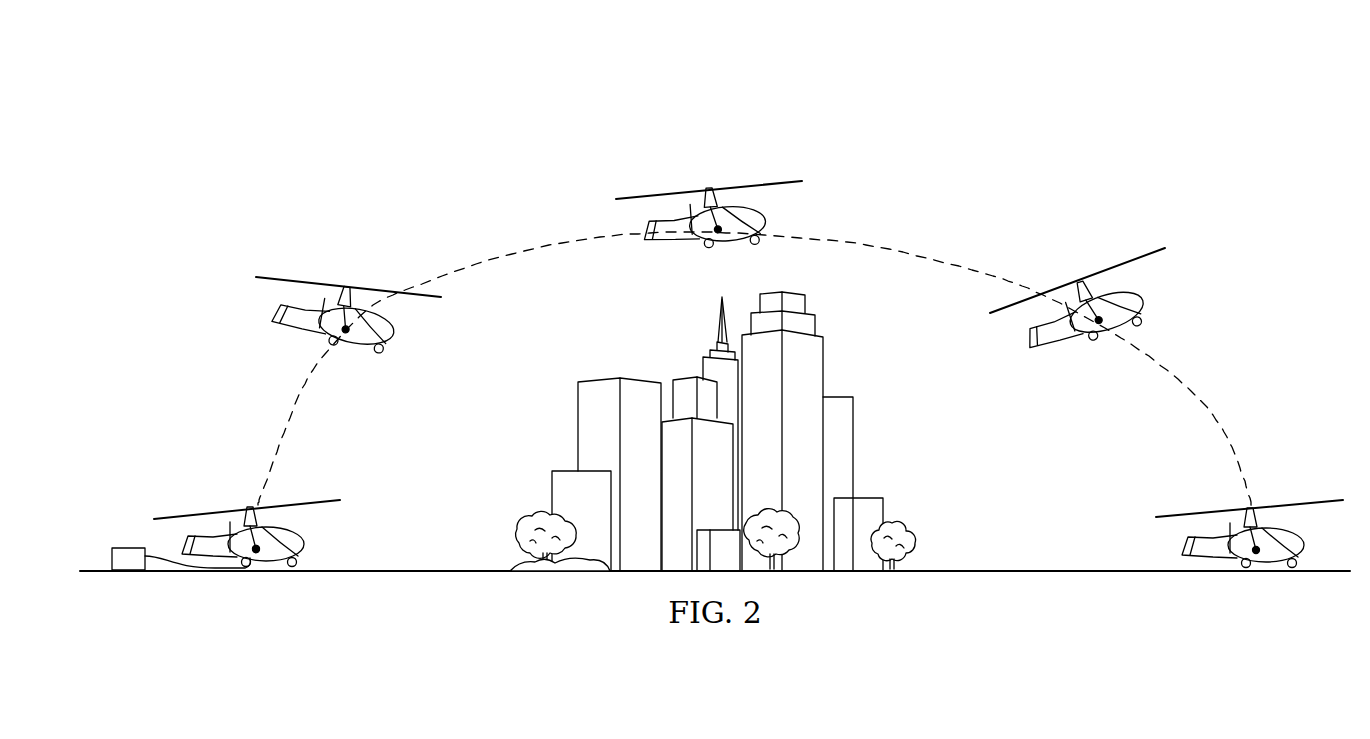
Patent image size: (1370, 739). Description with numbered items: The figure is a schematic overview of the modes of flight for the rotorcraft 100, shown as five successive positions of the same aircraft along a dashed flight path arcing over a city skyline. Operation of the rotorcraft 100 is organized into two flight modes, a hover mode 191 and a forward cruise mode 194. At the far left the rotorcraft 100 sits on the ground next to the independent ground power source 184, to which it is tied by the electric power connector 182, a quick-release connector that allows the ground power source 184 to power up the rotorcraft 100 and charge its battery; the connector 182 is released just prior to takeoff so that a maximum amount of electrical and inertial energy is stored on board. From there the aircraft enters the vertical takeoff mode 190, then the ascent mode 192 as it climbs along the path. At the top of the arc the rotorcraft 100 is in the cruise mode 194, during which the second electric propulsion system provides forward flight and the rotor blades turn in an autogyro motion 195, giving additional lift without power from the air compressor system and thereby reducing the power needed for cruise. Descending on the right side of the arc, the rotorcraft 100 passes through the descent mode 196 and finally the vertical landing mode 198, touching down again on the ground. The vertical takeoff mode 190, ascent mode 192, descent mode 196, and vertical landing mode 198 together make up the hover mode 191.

The rotorcraft 100 is at (748, 340).
The electric power connector 182 is at (255, 557).
The independent ground power source 184 is at (130, 548).
The vertical takeoff mode 190 is at (235, 492).
The hover mode 191 is at (261, 211).
The ascent mode 192 is at (338, 270).
The forward cruise mode 194 is at (697, 172).
The autogyro motion 195 is at (759, 178).
The descent mode 196 is at (1068, 265).
The vertical landing mode 198 is at (1266, 491).